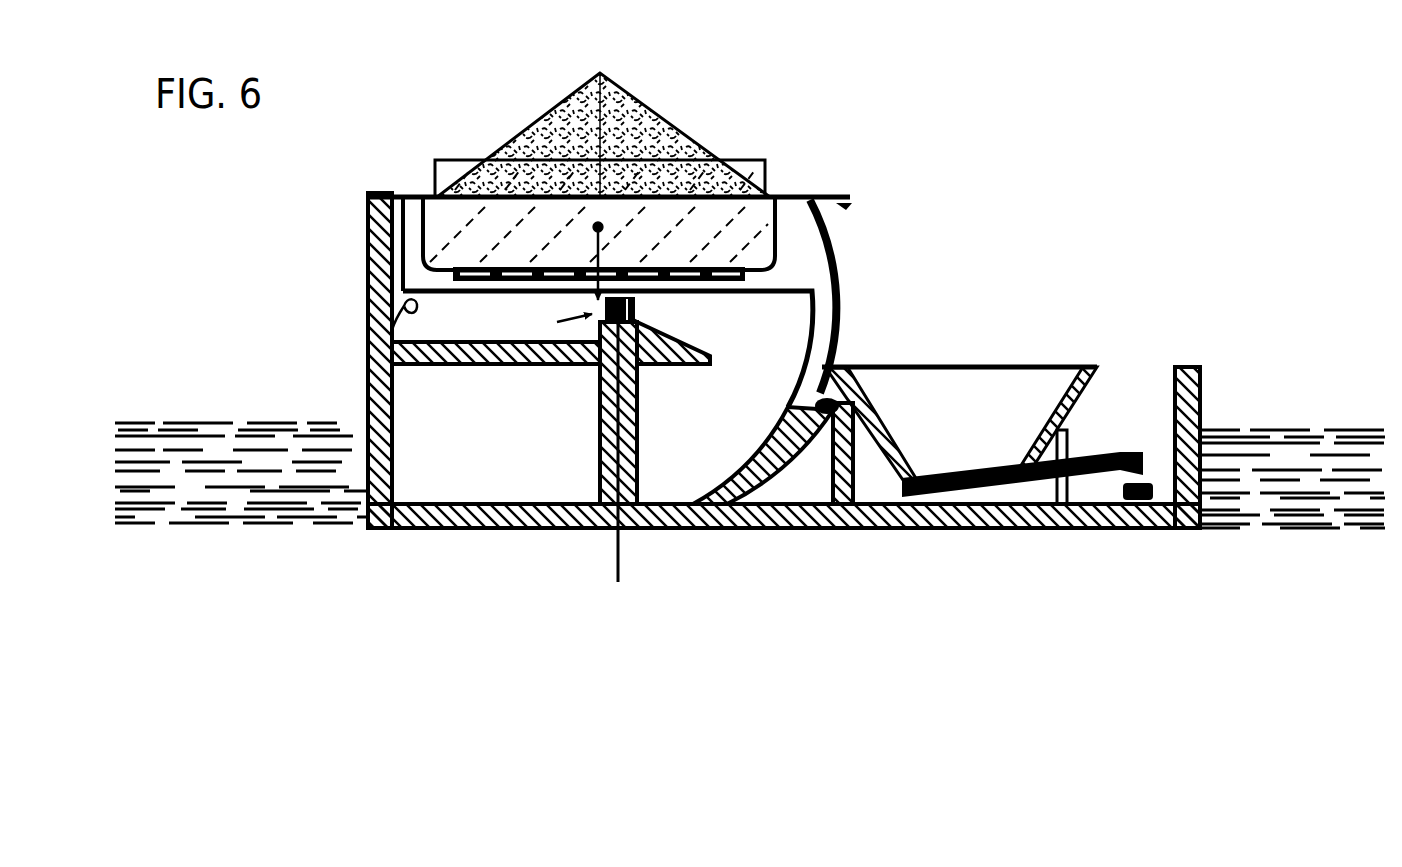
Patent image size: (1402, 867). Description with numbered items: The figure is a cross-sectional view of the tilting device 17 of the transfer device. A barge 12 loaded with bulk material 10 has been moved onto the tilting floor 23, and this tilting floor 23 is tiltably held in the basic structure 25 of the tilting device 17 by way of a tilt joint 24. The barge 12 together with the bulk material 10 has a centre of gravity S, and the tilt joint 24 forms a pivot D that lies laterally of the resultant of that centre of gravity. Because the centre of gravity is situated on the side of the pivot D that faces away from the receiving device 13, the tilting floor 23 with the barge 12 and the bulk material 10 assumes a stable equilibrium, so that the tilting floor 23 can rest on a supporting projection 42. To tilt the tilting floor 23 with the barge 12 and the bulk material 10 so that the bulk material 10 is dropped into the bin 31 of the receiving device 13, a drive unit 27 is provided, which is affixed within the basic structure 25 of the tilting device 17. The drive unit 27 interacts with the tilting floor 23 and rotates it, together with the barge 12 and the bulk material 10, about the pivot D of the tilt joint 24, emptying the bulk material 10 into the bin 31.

The bulk material 10 is at (666, 140).
The barge 12 is at (733, 208).
The receiving device 13 is at (987, 390).
The tilting device 17 is at (972, 158).
The tilting floor 23 is at (820, 250).
The tilt joint 24 is at (640, 309).
The basic structure 25 is at (368, 226).
The drive unit 27 is at (858, 392).
The bin 31 is at (990, 434).
The supporting projection 42 is at (404, 306).